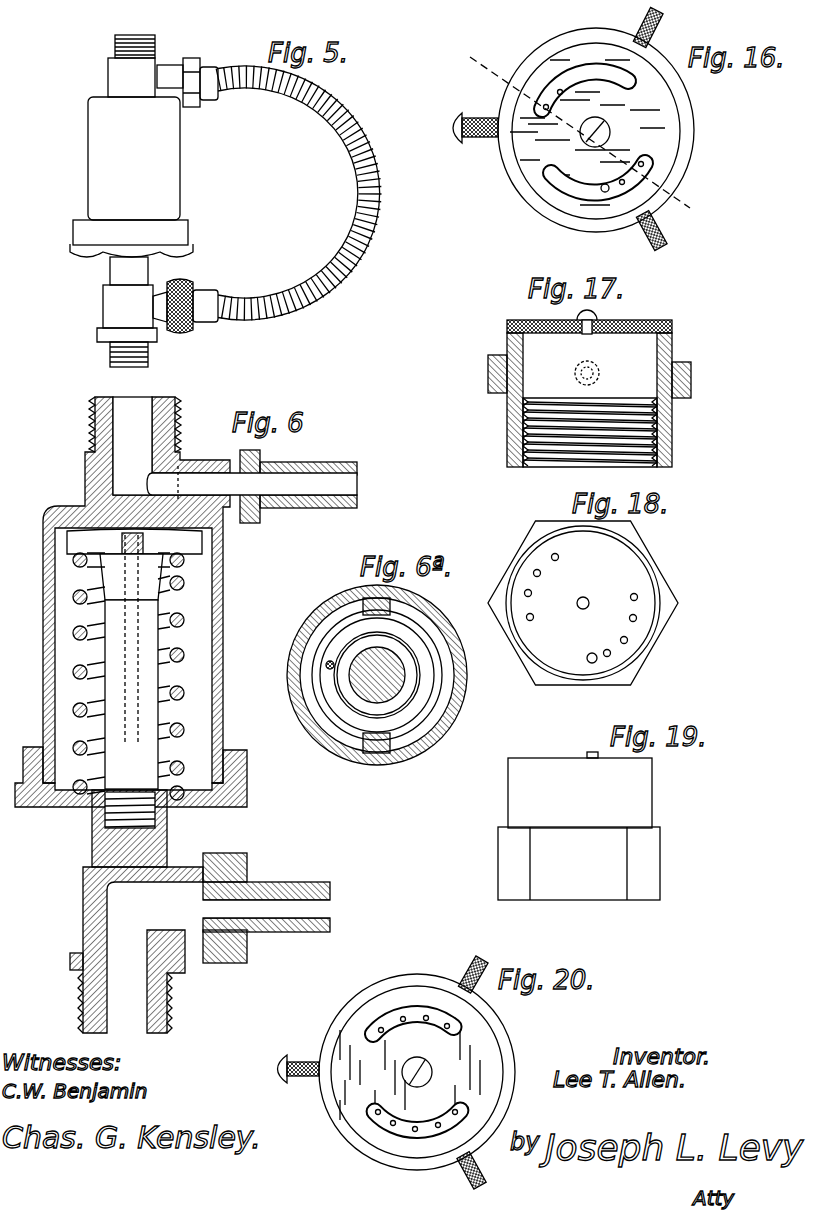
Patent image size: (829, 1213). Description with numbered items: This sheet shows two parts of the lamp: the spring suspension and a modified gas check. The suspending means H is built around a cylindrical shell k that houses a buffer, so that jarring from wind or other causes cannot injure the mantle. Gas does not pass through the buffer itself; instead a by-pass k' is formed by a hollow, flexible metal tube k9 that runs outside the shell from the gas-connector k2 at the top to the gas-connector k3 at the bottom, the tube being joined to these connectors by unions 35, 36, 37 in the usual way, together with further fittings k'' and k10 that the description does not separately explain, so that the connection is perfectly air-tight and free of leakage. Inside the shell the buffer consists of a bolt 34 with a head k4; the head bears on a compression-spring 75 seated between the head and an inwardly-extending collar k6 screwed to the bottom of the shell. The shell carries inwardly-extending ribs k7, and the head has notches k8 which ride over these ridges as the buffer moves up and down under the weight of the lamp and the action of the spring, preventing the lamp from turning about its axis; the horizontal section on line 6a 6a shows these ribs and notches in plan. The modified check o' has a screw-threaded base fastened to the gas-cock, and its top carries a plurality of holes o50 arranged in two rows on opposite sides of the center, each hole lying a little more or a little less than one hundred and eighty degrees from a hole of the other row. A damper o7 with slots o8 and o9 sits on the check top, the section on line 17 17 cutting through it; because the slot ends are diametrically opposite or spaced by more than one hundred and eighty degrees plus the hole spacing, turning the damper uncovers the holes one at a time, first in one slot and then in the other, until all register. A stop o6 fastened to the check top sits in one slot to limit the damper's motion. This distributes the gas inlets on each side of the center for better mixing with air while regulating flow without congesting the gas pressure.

In FIG. 5, the cylindrical shell k is at (127, 200).
In FIG. 6, the cylindrical shell k is at (119, 590).
In FIG. 6A, the cylindrical shell k is at (377, 675).
In FIG. 5, the by-pass k' is at (345, 193).
In FIG. 6, the by-pass k' is at (265, 690).
In FIG. 5, the coupling nut k'' is at (191, 296).
In FIG. 5, the gas-connector k2 is at (156, 52).
In FIG. 6, the gas-connector k2 is at (176, 410).
In FIG. 5, the gas-connector k3 is at (108, 353).
In FIG. 6, the gas-connector k3 is at (167, 1007).
In FIG. 6, the head k4 is at (203, 553).
In FIG. 6, the inwardly-extending collar k6 is at (60, 808).
In FIG. 6, the inwardly-extending ribs k7 is at (130, 648).
In FIG. 6A, the inwardly-extending ribs k7 is at (365, 605).
In FIG. 6, the notches k8 is at (130, 560).
In FIG. 6A, the notches k8 is at (395, 605).
In FIG. 5, the flexible metal tube k9 is at (370, 203).
In FIG. 5, the coupling nut k10 is at (198, 62).
In FIG. 5, the suspending means H is at (207, 158).
In FIG. 6, the suspending means H is at (223, 710).
In FIG. 6, the bolt 34 is at (131, 662).
In FIG. 6A, the bolt 34 is at (377, 675).
In FIG. 6, the union 35 is at (245, 862).
In FIG. 5, the union 36 is at (212, 92).
In FIG. 6, the union 36 is at (300, 458).
In FIG. 5, the union 37 is at (212, 318).
In FIG. 6, the union 37 is at (288, 888).
In FIG. 6, the compression-spring 75 is at (183, 588).
In FIG. 16, the section line 17 is at (492, 86).
In FIG. 6, the section line 6a is at (25, 660).
In FIG. 17, the check o' is at (604, 400).
In FIG. 18, the check o' is at (583, 603).
In FIG. 19, the check o' is at (590, 829).
In FIG. 16, the stop o6 is at (606, 190).
In FIG. 18, the stop o6 is at (586, 658).
In FIG. 19, the stop o6 is at (590, 752).
In FIG. 20, the stop o6 is at (382, 1118).
In FIG. 16, the damper o7 is at (683, 182).
In FIG. 17, the damper o7 is at (672, 340).
In FIG. 20, the damper o7 is at (417, 1072).
In FIG. 16, the slot o8 is at (576, 186).
In FIG. 17, the slot o8 is at (648, 332).
In FIG. 20, the slot o8 is at (424, 1130).
In FIG. 16, the slot o9 is at (600, 72).
In FIG. 17, the slot o9 is at (515, 330).
In FIG. 20, the slot o9 is at (412, 1012).
In FIG. 17, the holes o50 is at (560, 344).
In FIG. 18, the holes o50 is at (623, 619).